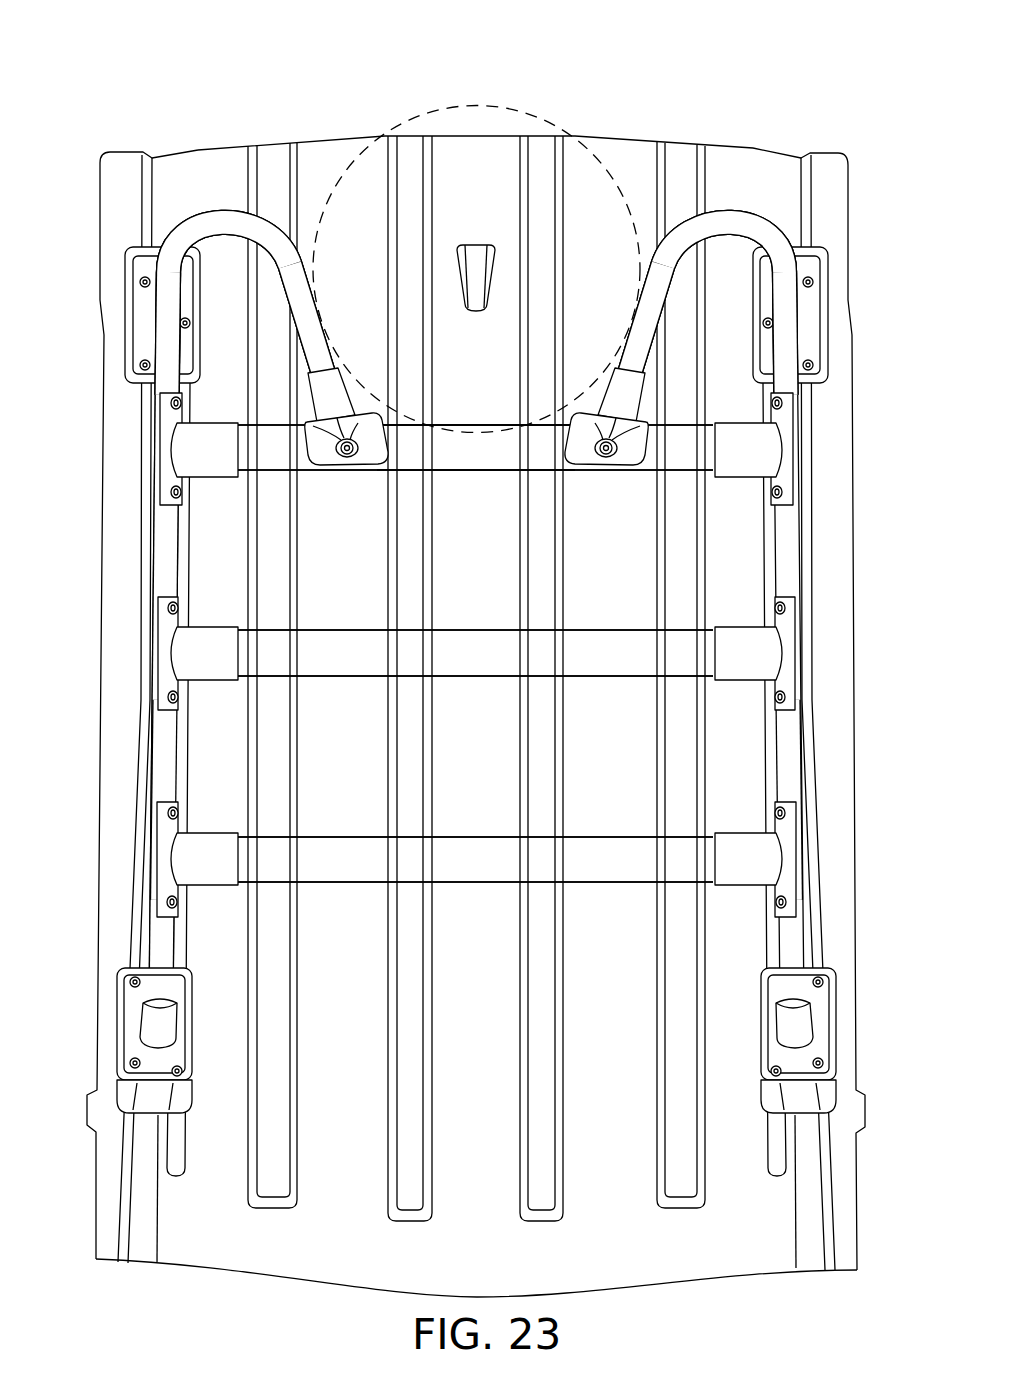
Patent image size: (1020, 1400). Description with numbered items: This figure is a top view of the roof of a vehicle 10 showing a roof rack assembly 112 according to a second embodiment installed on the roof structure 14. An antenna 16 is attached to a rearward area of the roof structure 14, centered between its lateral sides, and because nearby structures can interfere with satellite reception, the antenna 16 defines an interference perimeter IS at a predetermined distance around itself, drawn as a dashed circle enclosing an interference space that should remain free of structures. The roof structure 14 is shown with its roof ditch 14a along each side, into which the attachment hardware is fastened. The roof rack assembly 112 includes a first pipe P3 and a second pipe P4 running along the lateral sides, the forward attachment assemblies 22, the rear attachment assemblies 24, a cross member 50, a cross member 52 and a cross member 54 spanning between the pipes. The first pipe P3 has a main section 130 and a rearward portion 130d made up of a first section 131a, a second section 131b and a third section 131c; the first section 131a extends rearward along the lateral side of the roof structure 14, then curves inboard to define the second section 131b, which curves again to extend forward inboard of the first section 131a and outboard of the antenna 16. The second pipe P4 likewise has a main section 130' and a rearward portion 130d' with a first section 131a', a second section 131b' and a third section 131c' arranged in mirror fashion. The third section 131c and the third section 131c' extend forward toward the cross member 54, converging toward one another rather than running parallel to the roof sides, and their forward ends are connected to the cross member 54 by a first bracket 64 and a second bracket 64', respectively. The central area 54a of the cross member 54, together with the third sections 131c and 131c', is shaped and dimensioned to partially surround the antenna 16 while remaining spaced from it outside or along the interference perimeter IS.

The vehicle 10 is at (542, 47).
The roof structure 14 is at (638, 1250).
The roof ditch 14a is at (167, 200).
The antenna 16 is at (476, 258).
The forward attachment assembly 22 is at (132, 1015).
The rear attachment assembly 24 is at (145, 305).
The cross member 50 is at (350, 862).
The cross member 52 is at (603, 653).
The cross member 54 is at (477, 448).
The central portion of front cross bar 54a is at (575, 402).
The first bracket 64 is at (346, 397).
The second bracket 64' is at (606, 397).
The roof rack assembly 112 is at (131, 440).
The main section 130 is at (107, 638).
The main section 130' is at (771, 613).
The rearward portion 130d is at (252, 214).
The rearward portion 130d' is at (713, 214).
The first section 131a is at (181, 233).
The second section 131b is at (230, 171).
The third section 131c is at (320, 221).
The first section 131a' is at (779, 233).
The second section 131b' is at (724, 171).
The third section 131c' is at (641, 221).
The interference perimeter IS is at (425, 110).
The first pipe P3 is at (160, 748).
The second pipe P4 is at (790, 748).